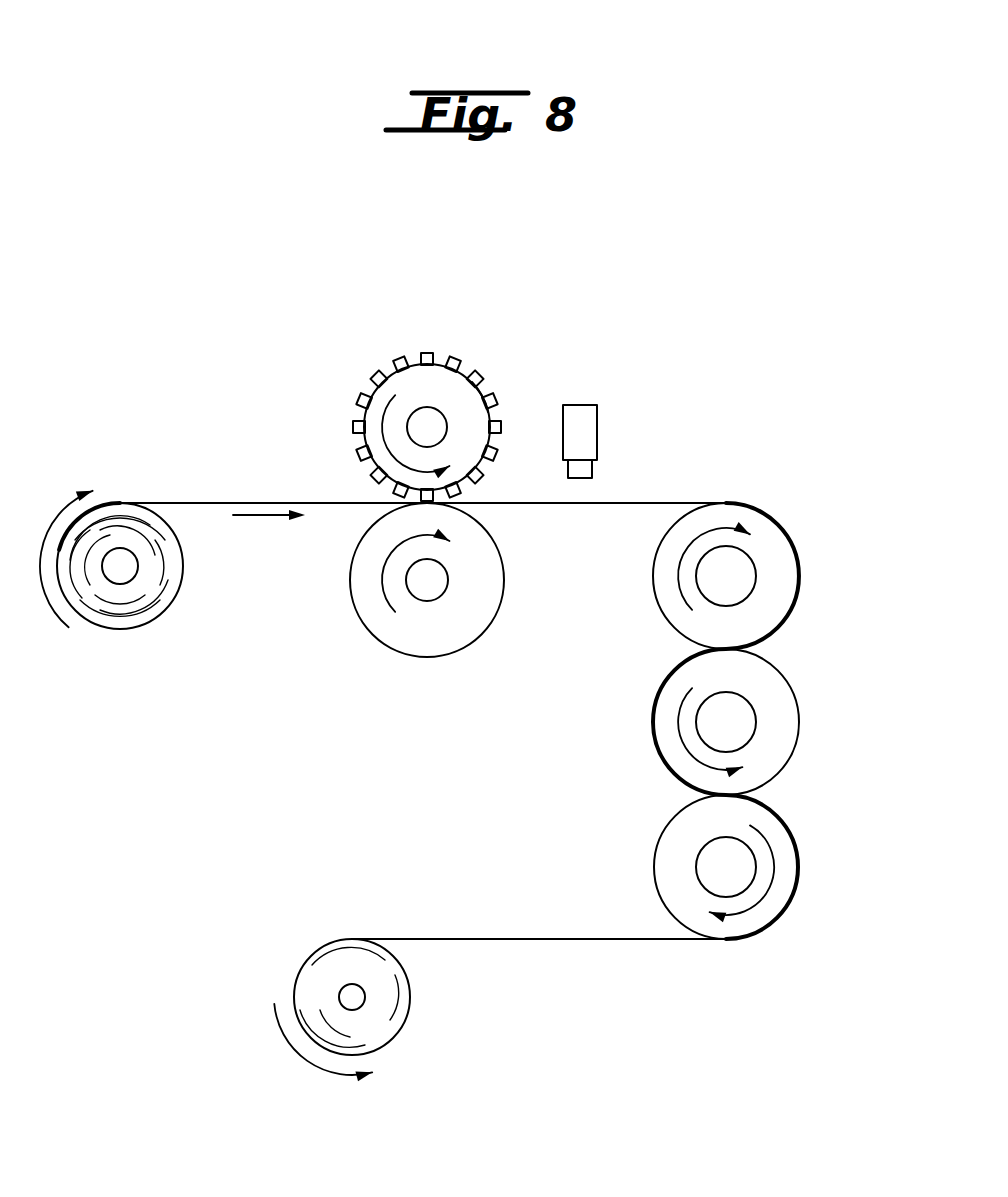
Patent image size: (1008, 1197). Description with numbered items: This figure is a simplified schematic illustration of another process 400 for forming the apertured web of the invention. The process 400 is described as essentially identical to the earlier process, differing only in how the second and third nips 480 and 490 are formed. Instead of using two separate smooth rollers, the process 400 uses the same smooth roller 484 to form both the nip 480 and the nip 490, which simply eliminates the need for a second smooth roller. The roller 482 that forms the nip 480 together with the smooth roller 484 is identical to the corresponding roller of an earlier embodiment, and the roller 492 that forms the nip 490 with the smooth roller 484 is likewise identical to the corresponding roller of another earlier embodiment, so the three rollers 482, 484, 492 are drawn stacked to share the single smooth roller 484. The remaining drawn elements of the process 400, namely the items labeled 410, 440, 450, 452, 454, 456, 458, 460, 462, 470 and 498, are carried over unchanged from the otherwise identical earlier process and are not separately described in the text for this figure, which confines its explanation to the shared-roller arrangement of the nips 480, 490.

The process 400 is at (252, 357).
The supply roll 410 is at (122, 617).
The web 440 is at (195, 503).
The nip 450 is at (368, 514).
The toothed embossing roller 452 is at (471, 363).
The roller body 454 is at (365, 397).
The roller surface 456 is at (490, 393).
The teeth 458 is at (428, 355).
The backing roller 460 is at (470, 622).
The roller axle 462 is at (438, 657).
The applicator head 470 is at (587, 420).
The second nip 480 is at (728, 705).
The roller 482 is at (770, 545).
The smooth roller 484 is at (770, 712).
The third nip 490 is at (720, 864).
The roller 492 is at (785, 878).
The take-up roll 498 is at (333, 955).